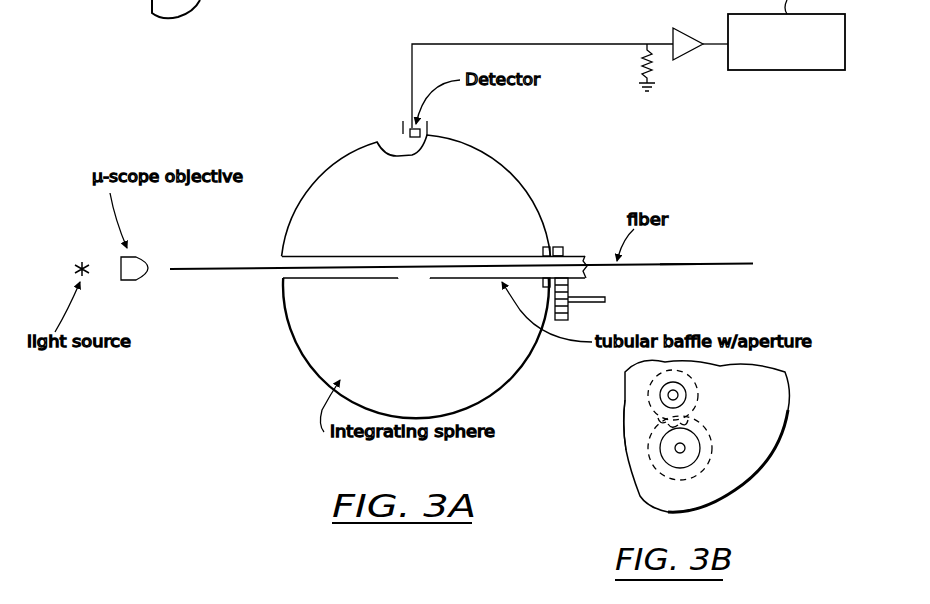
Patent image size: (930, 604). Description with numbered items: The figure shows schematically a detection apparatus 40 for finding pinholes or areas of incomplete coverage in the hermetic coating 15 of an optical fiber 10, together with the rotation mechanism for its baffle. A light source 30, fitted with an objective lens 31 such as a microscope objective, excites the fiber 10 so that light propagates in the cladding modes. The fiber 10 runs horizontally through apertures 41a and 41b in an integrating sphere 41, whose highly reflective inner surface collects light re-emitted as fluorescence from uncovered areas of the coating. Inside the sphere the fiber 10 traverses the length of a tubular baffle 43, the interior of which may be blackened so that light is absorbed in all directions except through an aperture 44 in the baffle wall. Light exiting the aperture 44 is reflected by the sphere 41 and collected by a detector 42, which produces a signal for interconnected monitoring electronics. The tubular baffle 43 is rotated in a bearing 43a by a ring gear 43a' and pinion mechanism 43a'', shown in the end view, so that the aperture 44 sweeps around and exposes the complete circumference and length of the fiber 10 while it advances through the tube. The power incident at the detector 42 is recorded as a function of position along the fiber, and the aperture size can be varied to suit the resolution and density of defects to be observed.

In FIG. 3A, the optical fiber 10 is at (722, 256).
In FIG. 3B, the optical fiber 10 is at (687, 392).
In FIG. 3A, the hermetic coating 15 is at (671, 263).
In FIG. 3A, the light source 30 is at (78, 262).
In FIG. 3A, the objective lens 31 is at (118, 286).
In FIG. 3A, the detection apparatus 40 is at (538, 150).
In FIG. 3A, the integrating sphere 41 is at (488, 152).
In FIG. 3A, the aperture 41a is at (552, 250).
In FIG. 3A, the aperture 41b is at (281, 258).
In FIG. 3A, the detector 42 is at (385, 146).
In FIG. 3A, the tubular baffle 43 is at (482, 256).
In FIG. 3B, the tubular baffle 43 is at (648, 392).
In FIG. 3A, the bearing 43a is at (524, 253).
In FIG. 3A, the ring gear 43a' is at (588, 238).
In FIG. 3B, the ring gear 43a' is at (707, 398).
In FIG. 3A, the pinion mechanism 43a'' is at (611, 296).
In FIG. 3B, the pinion mechanism 43a'' is at (711, 448).
In FIG. 3A, the aperture 44 is at (418, 285).